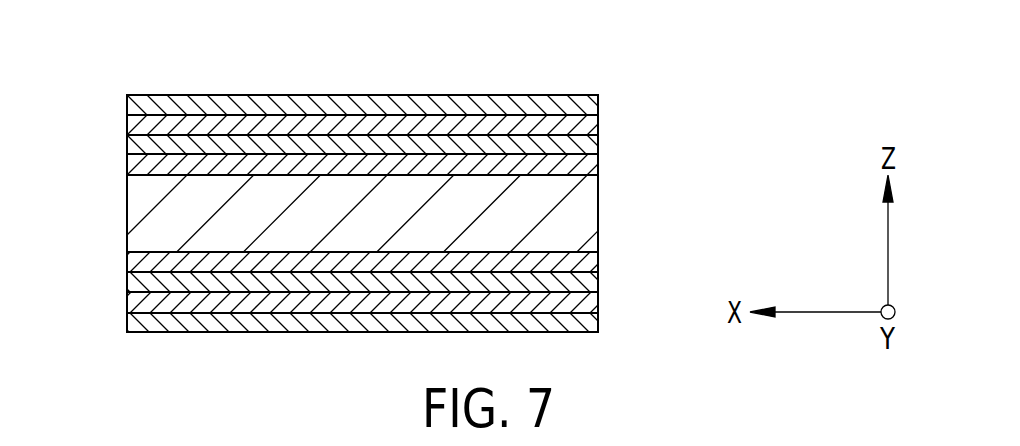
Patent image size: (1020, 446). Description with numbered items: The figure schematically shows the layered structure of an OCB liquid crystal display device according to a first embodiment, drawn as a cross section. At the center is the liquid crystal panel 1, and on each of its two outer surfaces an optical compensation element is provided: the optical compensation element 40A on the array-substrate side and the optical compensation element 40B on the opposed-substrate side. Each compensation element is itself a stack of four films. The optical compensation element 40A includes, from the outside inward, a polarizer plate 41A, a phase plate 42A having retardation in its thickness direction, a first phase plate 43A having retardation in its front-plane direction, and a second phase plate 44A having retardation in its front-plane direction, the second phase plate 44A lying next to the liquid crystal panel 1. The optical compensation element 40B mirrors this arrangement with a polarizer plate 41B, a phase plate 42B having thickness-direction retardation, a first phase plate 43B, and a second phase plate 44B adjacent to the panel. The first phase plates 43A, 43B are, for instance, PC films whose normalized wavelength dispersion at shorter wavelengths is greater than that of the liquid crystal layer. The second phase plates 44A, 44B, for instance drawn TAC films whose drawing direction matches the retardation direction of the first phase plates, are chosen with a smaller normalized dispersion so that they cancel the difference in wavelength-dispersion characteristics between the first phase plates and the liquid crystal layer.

The liquid crystal panel 1 is at (598, 212).
The optical compensation element 40A is at (362, 292).
The optical compensation element 40B is at (362, 130).
The polarizer plate 41A is at (128, 322).
The phase plate 42A is at (128, 303).
The first phase plate 43A is at (128, 283).
The second phase plate 44A is at (128, 261).
The polarizer plate 41B is at (128, 104).
The phase plate 42B is at (128, 126).
The first phase plate 43B is at (128, 148).
The second phase plate 44B is at (128, 163).